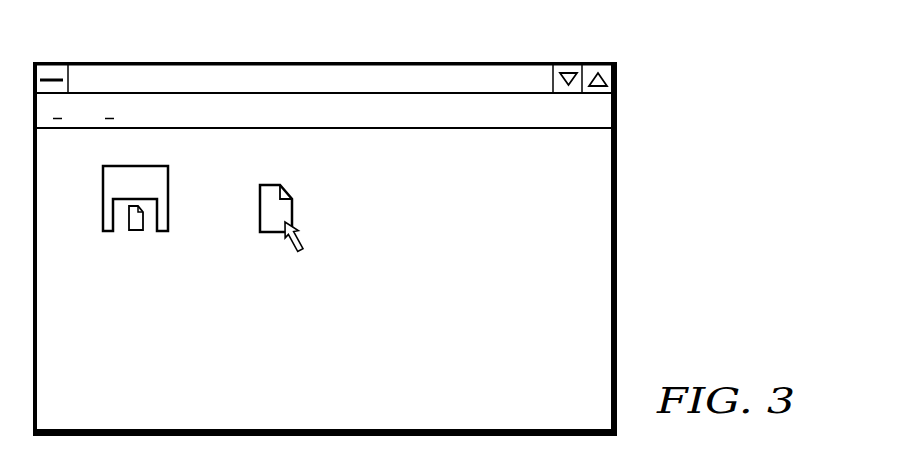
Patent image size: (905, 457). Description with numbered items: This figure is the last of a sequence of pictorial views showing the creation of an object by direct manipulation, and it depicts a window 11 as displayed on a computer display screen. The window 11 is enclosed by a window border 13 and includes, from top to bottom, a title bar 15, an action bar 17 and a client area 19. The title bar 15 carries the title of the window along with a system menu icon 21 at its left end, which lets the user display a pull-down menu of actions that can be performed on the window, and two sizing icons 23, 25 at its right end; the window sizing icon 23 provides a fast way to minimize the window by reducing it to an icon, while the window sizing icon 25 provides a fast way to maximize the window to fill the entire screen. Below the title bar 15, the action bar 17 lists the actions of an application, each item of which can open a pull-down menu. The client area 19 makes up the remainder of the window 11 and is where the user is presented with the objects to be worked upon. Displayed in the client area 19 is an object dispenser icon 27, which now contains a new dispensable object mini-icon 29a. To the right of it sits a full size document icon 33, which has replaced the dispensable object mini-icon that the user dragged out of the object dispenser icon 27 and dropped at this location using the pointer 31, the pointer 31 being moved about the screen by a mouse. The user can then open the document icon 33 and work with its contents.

The window 11 is at (652, 131).
The window border 13 is at (617, 240).
The title bar 15 is at (505, 63).
The action bar 17 is at (497, 129).
The client area 19 is at (518, 409).
The system menu icon 21 is at (47, 63).
The window sizing icon 23 is at (563, 63).
The window sizing icon 25 is at (600, 63).
The object dispenser icon 27 is at (169, 179).
The dispensable object mini-icon 29a is at (147, 228).
The pointer 31 is at (298, 241).
The document icon 33 is at (284, 195).